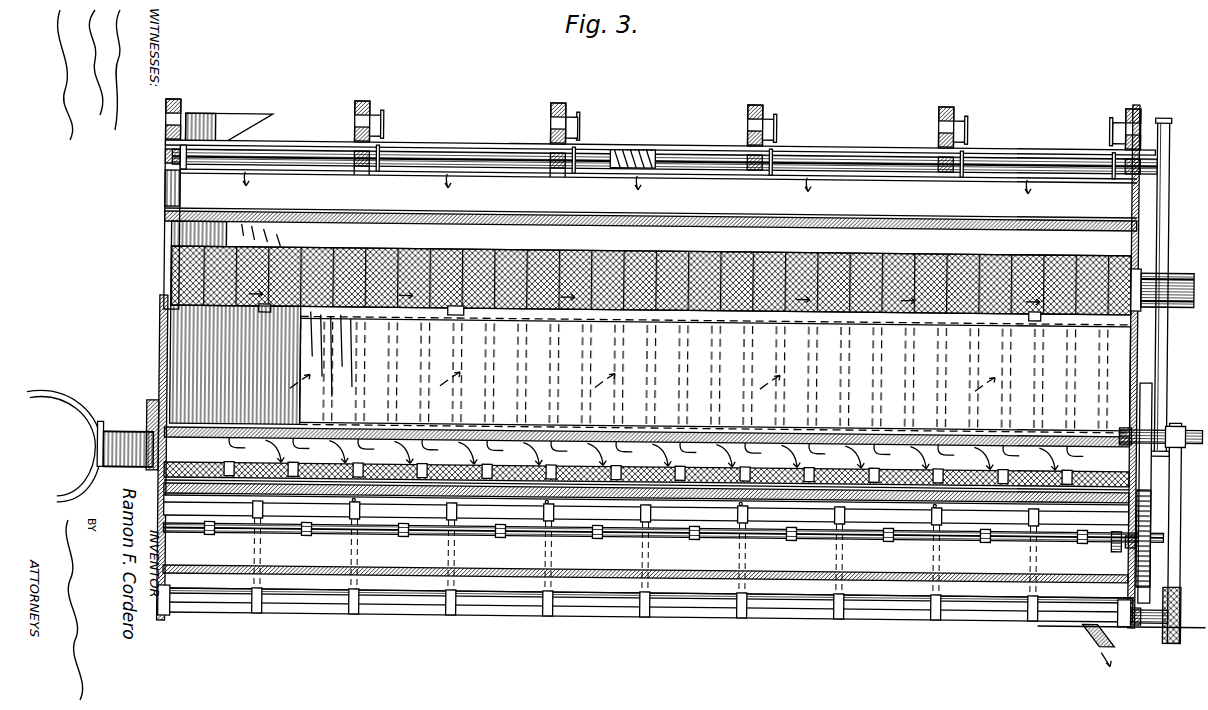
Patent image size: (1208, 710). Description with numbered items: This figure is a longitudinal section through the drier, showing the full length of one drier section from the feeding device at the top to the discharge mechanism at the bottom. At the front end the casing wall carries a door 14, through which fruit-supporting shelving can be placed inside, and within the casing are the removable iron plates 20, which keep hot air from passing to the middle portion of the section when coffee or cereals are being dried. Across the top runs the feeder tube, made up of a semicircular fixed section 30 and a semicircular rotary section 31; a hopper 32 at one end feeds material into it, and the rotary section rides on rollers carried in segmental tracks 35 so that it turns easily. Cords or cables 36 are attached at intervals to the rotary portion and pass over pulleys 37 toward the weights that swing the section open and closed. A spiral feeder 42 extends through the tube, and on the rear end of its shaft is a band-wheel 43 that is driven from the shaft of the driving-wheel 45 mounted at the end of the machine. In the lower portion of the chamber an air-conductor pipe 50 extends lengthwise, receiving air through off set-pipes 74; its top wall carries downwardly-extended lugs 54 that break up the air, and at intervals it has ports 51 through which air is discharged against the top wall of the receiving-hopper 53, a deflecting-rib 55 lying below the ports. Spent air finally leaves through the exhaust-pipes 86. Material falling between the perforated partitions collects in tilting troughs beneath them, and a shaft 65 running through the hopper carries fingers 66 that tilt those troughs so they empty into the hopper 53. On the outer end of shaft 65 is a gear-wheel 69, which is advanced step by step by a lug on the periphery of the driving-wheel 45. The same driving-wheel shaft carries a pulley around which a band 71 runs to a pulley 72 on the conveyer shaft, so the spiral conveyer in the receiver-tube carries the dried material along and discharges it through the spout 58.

The door 14 is at (160, 371).
The plates 20 is at (651, 339).
The semicircular fixed section 30 is at (383, 137).
The semicircular rotary section 31 is at (505, 170).
The hopper 32 is at (242, 116).
The segmental tracks 35 is at (352, 140).
The cords or cables 36 is at (578, 131).
The pulleys 37 is at (575, 118).
The spiral feeder 42 is at (636, 151).
The band-wheel 43 is at (1167, 152).
The driving-wheel 45 is at (1152, 470).
The air-conductor pipe 50 is at (418, 464).
The openings or ports 51 is at (405, 452).
The receiving-hopper 53 is at (646, 562).
The lugs or projections 54 is at (378, 434).
The deflecting-rib 55 is at (430, 502).
The spout 58 is at (1095, 640).
The shaft 65 is at (1016, 536).
The fingers 66 is at (891, 538).
The gear-wheel 69 is at (1150, 530).
The band 71 is at (1170, 577).
The pulley 72 is at (1164, 630).
The off set-pipes 74 is at (123, 481).
The exhaust-pipes 86 is at (1176, 270).